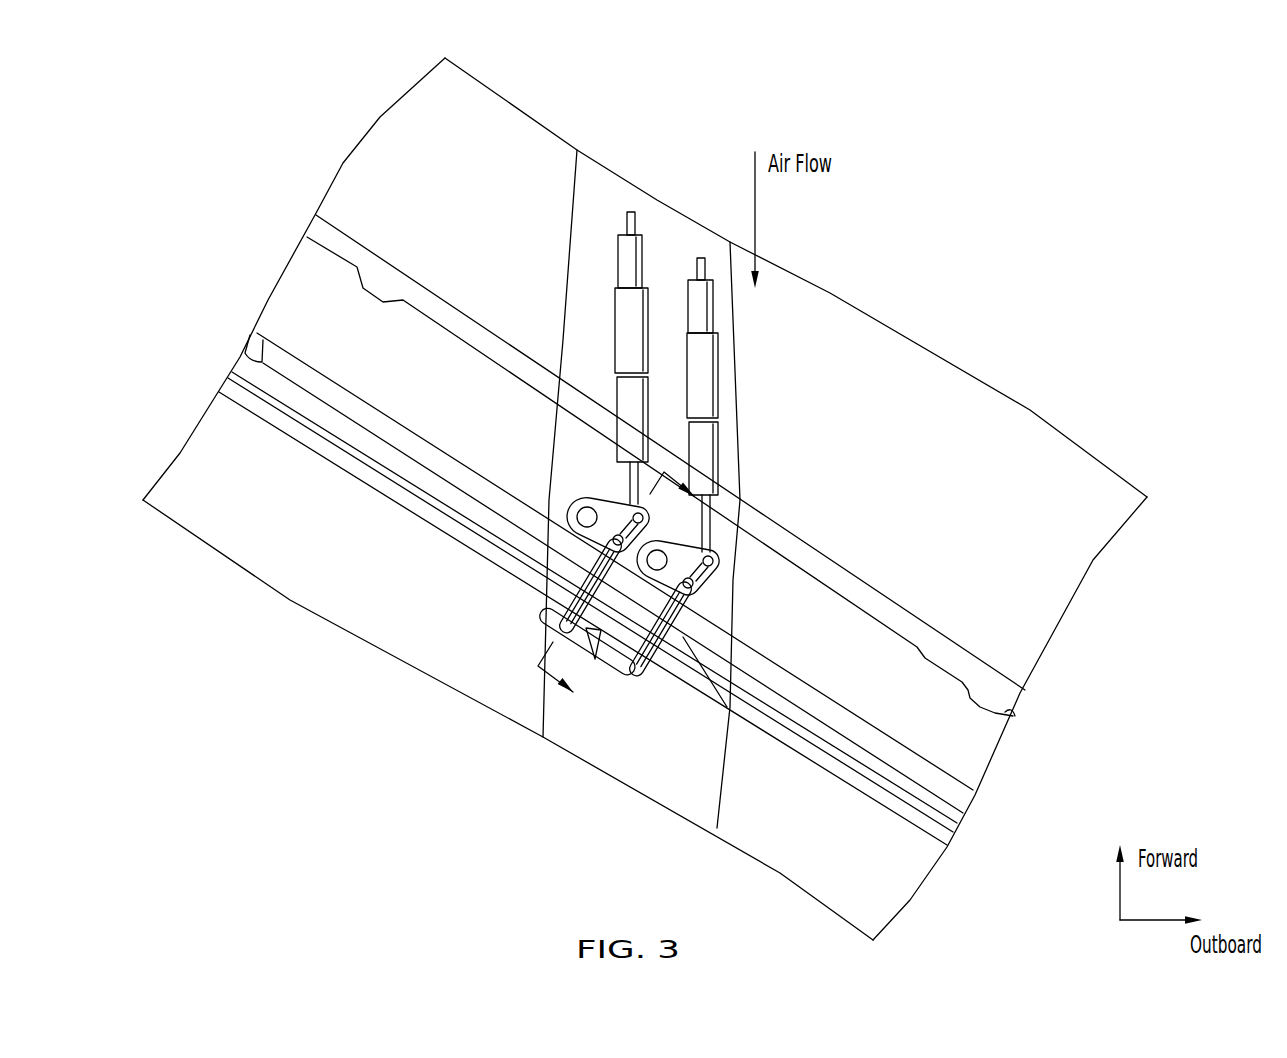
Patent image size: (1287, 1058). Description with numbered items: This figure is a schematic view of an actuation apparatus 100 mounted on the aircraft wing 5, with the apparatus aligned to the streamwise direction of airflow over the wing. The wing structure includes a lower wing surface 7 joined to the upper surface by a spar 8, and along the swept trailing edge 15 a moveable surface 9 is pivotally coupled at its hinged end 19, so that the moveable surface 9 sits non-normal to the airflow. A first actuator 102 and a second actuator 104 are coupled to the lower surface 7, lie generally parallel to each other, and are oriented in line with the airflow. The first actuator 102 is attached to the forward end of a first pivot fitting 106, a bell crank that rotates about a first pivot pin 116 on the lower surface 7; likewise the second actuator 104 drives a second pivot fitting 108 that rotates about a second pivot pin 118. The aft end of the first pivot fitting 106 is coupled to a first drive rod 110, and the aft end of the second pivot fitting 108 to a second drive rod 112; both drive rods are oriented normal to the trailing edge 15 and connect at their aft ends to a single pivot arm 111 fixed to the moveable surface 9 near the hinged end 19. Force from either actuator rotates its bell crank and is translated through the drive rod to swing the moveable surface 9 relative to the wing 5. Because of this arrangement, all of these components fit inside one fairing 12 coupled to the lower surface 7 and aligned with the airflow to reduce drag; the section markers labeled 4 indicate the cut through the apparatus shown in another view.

The section line 4- 4 is at (626, 591).
The aircraft wing 5 is at (287, 120).
The lower wing surface 7 is at (993, 437).
The spar 8 is at (968, 803).
The moveable surface 9 is at (203, 460).
The fairing 12 is at (573, 195).
The trailing edge 15 is at (231, 362).
The hinged end 19 is at (231, 369).
The actuation apparatus 100 is at (862, 213).
The first actuator 102 is at (628, 308).
The second actuator 104 is at (697, 372).
The first pivot fitting 106 is at (582, 494).
The second pivot fitting 108 is at (720, 563).
The first drive rod 110 is at (592, 648).
The pivot arm 111 is at (617, 660).
The second drive rod 112 is at (663, 670).
The first pivot pin 116 is at (579, 523).
The second pivot pin 118 is at (661, 575).